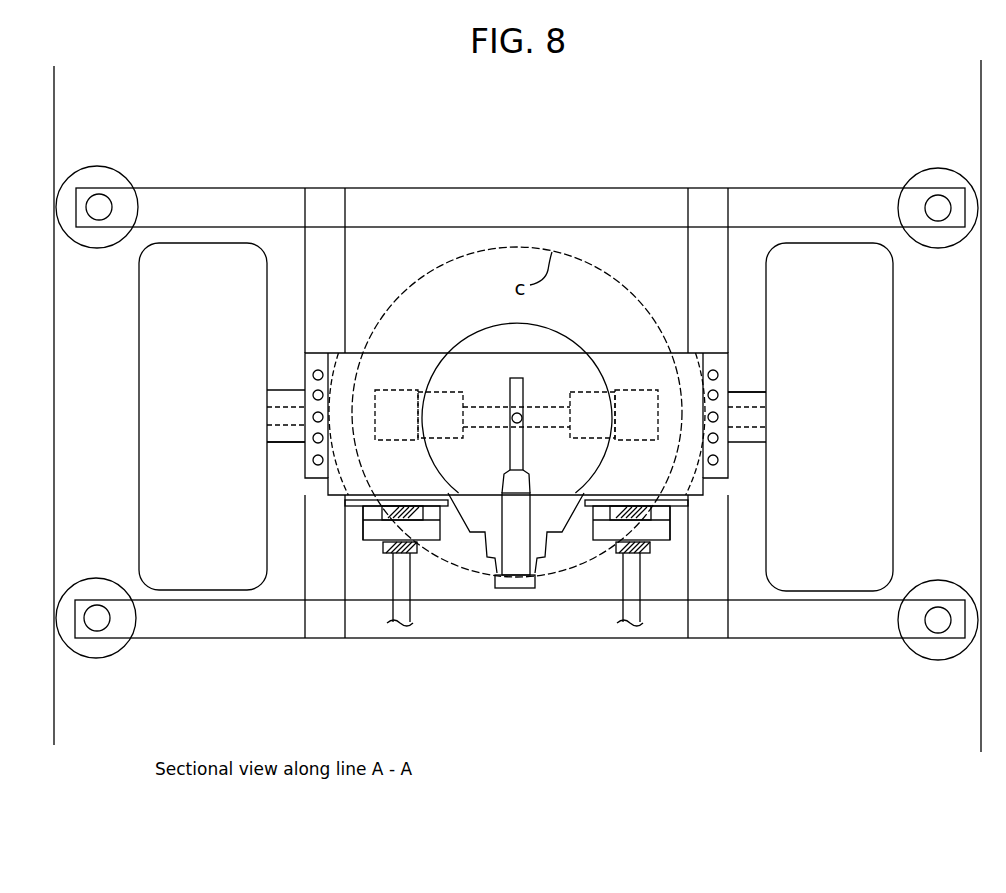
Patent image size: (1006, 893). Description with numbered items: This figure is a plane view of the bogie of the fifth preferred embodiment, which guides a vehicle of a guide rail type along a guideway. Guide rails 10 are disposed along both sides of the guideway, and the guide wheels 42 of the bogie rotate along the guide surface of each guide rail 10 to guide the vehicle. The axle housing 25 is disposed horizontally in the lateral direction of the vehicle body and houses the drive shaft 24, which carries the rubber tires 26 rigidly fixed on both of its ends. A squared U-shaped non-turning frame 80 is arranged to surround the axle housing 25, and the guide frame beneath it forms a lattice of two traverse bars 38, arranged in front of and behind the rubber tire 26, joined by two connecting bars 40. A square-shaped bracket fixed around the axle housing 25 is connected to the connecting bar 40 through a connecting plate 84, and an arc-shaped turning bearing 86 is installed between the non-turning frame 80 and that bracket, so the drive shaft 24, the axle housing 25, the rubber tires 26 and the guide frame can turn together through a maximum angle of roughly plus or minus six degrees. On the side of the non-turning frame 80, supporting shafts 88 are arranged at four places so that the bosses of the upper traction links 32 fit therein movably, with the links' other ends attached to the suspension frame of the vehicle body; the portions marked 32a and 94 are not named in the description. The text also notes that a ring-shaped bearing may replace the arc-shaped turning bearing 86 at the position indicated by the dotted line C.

The guide rail 10 is at (56, 372).
The drive shaft 24 is at (288, 405).
The axle housing 25 is at (753, 391).
The rubber tire 26 is at (833, 243).
The upper traction link 32 is at (417, 598).
The clamping block 32a is at (397, 530).
The traverse bar 38 is at (326, 186).
The connecting bar 40 is at (347, 292).
The guide wheel 42 is at (99, 168).
The non-turning frame 80 is at (602, 343).
The connecting plate 84 is at (727, 353).
The arc-shaped turning bearing 86 is at (365, 355).
The supporting shaft 88 is at (367, 527).
The locking pin 94 is at (533, 575).